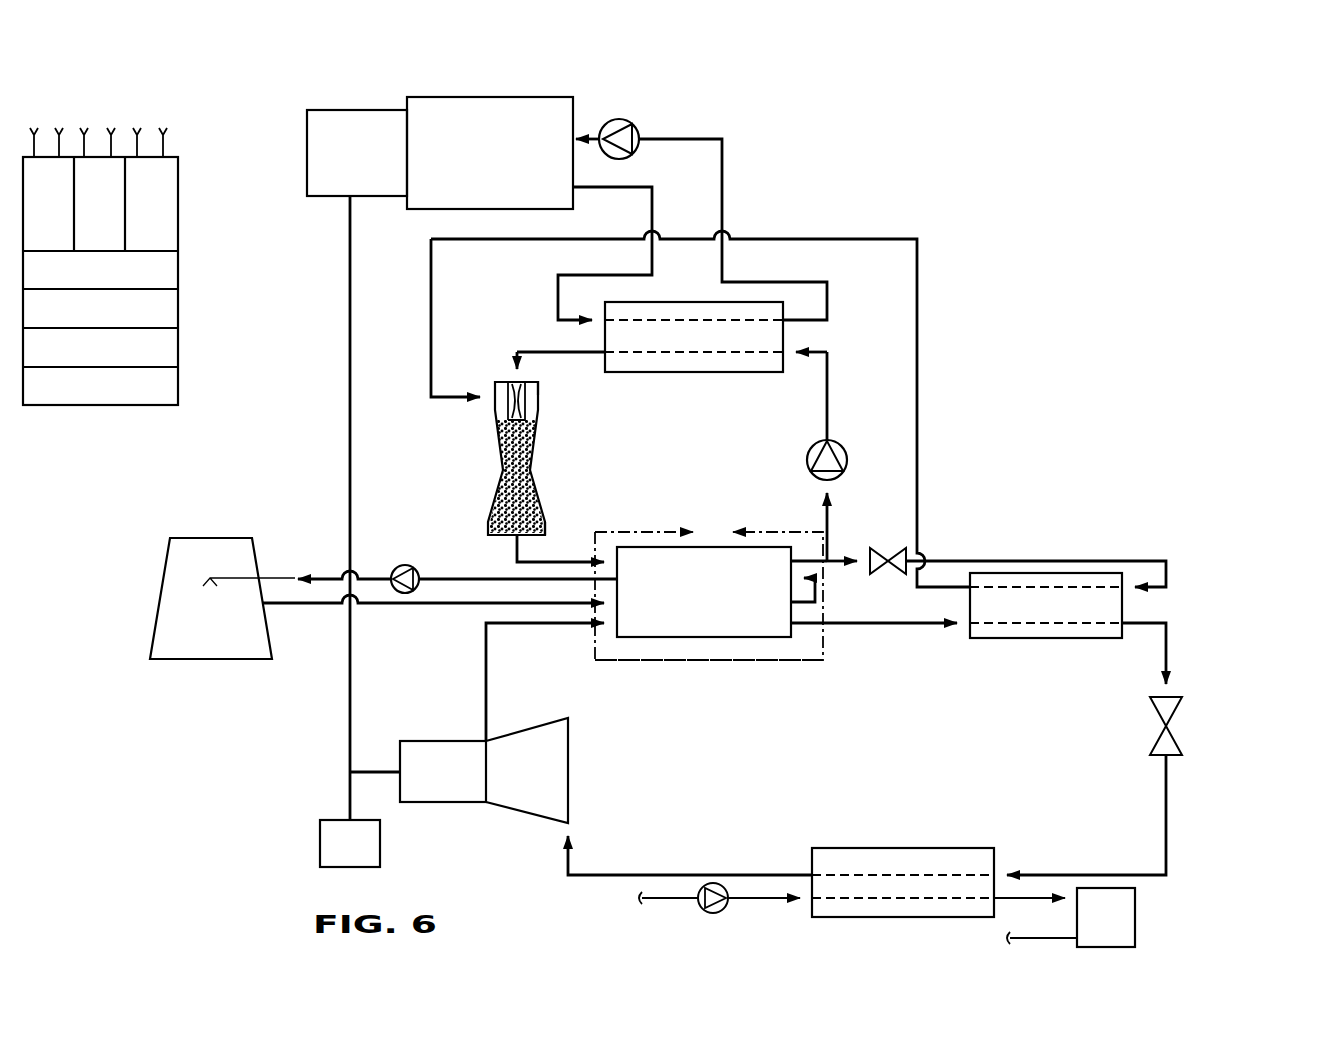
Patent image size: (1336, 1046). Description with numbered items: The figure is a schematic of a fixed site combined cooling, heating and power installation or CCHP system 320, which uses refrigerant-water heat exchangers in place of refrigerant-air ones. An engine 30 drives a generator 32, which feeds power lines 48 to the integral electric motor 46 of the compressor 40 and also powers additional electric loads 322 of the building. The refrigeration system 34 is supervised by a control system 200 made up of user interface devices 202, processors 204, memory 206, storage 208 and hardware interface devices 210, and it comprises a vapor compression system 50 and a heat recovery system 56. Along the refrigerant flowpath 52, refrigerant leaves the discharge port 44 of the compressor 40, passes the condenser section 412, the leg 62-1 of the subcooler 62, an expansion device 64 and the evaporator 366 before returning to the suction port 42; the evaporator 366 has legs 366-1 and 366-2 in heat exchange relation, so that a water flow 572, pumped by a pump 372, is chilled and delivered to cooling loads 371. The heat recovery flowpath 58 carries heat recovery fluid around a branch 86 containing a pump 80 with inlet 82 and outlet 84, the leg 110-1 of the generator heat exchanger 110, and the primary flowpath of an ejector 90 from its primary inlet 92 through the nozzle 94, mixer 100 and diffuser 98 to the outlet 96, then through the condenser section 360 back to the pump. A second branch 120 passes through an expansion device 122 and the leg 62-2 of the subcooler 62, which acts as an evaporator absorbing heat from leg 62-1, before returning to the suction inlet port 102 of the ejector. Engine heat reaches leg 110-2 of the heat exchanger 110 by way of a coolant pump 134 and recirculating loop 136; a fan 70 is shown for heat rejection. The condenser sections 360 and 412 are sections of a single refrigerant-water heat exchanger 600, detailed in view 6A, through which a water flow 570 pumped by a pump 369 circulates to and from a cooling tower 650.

The engine 30 is at (490, 153).
The generator 32 is at (357, 153).
The refrigeration system 34 is at (1274, 880).
The compressor 40 is at (592, 777).
The suction port 42 is at (576, 826).
The discharge port 44 is at (487, 741).
The electric motor 46 is at (443, 771).
The power lines 48 is at (350, 478).
The vapor compression system 50 is at (1207, 607).
The refrigerant flowpath 52 is at (1155, 896).
The heat recovery system 56 is at (1207, 233).
The heat recovery flowpath 58 is at (968, 323).
The subcooler 62 is at (1084, 645).
The subcooler leg 62-1 is at (1030, 623).
The heat recovery loop leg 62-2 is at (1110, 587).
The expansion device 64 is at (1133, 733).
The fan 70 is at (798, 496).
The pump 80 is at (857, 450).
The pump inlet 82 is at (836, 490).
The pump outlet 84 is at (828, 438).
The flowpath branch 86 is at (832, 338).
The ejector 90 is at (486, 455).
The primary flow inlet 92 is at (520, 378).
The nozzle 94 is at (530, 400).
The ejector outlet 96 is at (520, 548).
The diffuser 98 is at (548, 498).
The mixer 100 is at (536, 455).
The suction inlet port 102 is at (490, 397).
The heat exchanger 110 is at (752, 291).
The heat exchanger leg 110-1 is at (645, 352).
The heat exchanger leg 110-2 is at (675, 320).
The flowpath branch 120 is at (1020, 538).
The expansion device 122 is at (891, 546).
The coolant pump 134 is at (630, 116).
The recirculating loop 136 is at (664, 127).
The control system 200 is at (217, 288).
The user interface devices 202 is at (100, 389).
The processors 204 is at (100, 351).
The memory 206 is at (100, 312).
The storage 208 is at (100, 273).
The hardware interface devices 210 is at (190, 157).
The CCHP system 320 is at (1061, 178).
The electric loads 322 is at (350, 843).
The condenser section 360 is at (684, 654).
The evaporator 366 is at (999, 831).
The evaporator leg 366-1 is at (903, 875).
The evaporator leg 366-2 is at (923, 898).
The pump 369 is at (402, 560).
The cooling loads 371 is at (1064, 917).
The pump 372 is at (700, 918).
The condenser section 412 is at (602, 588).
The water flow 570 is at (408, 606).
The water flow 572 is at (777, 902).
The refrigerant-water heat exchanger 600 is at (722, 592).
The cooling tower 650 is at (222, 598).
The detail view reference 6A is at (709, 588).